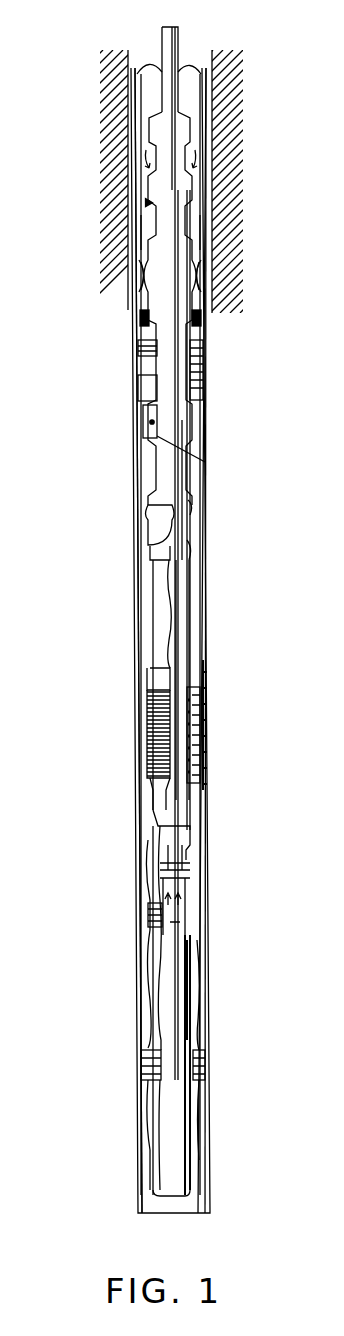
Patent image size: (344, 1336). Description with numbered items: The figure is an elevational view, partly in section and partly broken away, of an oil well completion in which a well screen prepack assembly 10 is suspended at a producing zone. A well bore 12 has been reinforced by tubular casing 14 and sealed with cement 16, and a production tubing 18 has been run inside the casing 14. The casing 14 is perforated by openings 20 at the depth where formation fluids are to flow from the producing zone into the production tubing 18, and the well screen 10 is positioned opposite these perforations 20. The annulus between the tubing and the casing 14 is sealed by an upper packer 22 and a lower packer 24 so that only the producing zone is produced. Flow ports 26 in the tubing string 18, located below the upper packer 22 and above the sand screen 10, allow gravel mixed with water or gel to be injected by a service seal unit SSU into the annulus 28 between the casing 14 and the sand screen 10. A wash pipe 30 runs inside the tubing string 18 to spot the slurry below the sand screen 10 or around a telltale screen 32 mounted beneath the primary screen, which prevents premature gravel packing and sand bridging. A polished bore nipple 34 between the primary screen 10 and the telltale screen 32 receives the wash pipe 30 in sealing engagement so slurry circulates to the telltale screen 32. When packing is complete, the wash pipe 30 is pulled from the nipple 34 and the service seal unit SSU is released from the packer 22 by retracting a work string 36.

The well screen prepack assembly 10 is at (200, 703).
The well bore 12 is at (212, 124).
The tubular casing 14 is at (205, 216).
The cement 16 is at (128, 95).
The production tubing 18 is at (188, 562).
The openings 20 is at (207, 740).
The upper packer 22 is at (146, 357).
The lower packer 24 is at (152, 1068).
The flow ports 26 is at (151, 420).
The annulus 28 is at (143, 586).
The wash pipe 30 is at (181, 638).
The telltale screen 32 is at (150, 918).
The polished bore nipple 34 is at (181, 822).
The work string 36 is at (178, 42).
The service seal unit SSU is at (134, 223).